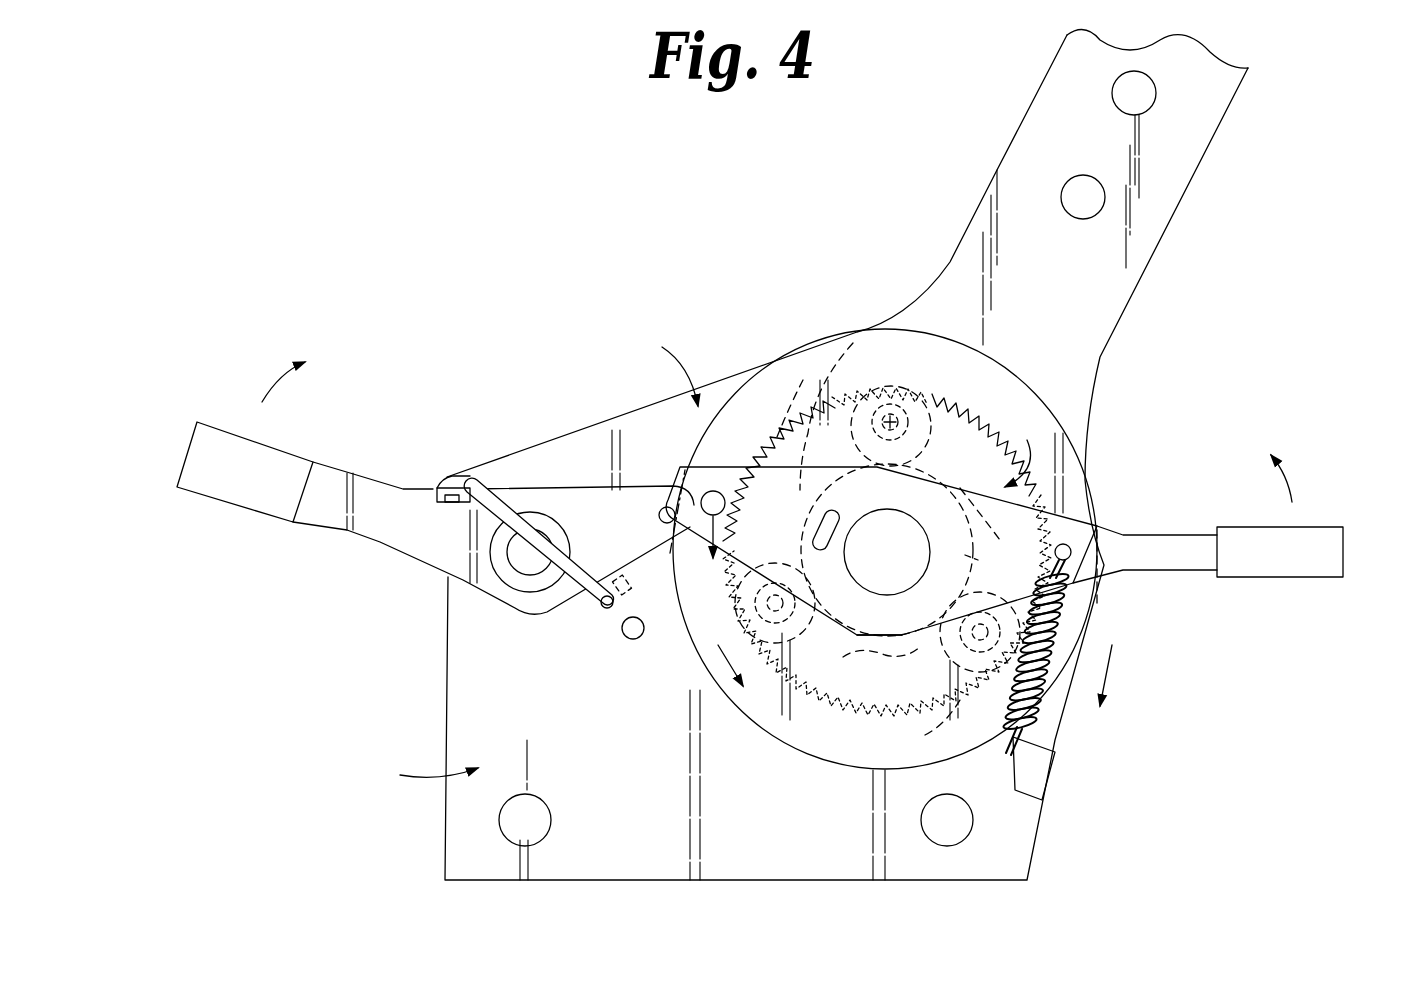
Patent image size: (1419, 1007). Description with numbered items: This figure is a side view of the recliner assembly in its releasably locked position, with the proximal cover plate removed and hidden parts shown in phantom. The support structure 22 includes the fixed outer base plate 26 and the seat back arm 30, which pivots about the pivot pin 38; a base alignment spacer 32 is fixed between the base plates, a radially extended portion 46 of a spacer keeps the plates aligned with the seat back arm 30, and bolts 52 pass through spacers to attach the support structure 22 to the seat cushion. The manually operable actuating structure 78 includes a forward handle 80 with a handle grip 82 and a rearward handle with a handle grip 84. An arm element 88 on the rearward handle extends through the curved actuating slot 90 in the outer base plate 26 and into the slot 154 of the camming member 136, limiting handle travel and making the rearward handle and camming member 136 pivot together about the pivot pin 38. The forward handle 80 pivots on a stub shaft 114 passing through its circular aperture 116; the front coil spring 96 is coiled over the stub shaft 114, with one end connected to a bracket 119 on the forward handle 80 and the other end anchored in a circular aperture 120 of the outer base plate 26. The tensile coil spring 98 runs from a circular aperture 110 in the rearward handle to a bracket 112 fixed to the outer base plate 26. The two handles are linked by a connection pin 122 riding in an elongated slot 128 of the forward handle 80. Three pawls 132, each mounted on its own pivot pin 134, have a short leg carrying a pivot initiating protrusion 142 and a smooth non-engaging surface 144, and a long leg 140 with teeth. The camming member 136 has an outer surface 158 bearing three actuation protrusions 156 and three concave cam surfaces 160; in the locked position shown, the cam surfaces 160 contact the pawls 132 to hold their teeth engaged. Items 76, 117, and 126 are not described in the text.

The support structure 22 is at (427, 778).
The fixed outer base plate 26 is at (447, 690).
The seat back arm 30 is at (1012, 122).
The base alignment spacer 32 is at (633, 642).
The pivot pin 38 is at (905, 530).
The radially extended portion 46 is at (1200, 572).
The bolt 52 is at (510, 826).
The brake drum 76 is at (674, 366).
The manually operable actuating structure 78 is at (881, 521).
The forward handle 80 is at (378, 530).
The handle grip 82 is at (200, 458).
The handle grip 84 is at (1332, 553).
The arm element 88 is at (820, 532).
The actuating slot 90 is at (850, 607).
The front coil spring 96 is at (582, 578).
The tensile coil spring 98 is at (1070, 622).
The circular aperture 110 is at (1072, 548).
The bracket 112 is at (1003, 750).
The stub shaft 114 is at (530, 530).
The circular aperture 116 is at (993, 554).
The clip 117 is at (440, 488).
The bracket 119 is at (452, 472).
The circular aperture 120 is at (607, 612).
The connection pin 122 is at (716, 491).
The pivot axis 126 is at (684, 468).
The elongated slot 128 is at (658, 514).
The pawl 132 is at (630, 604).
The pivot pin 134 is at (890, 388).
The camming member 136 is at (887, 530).
The long leg 140 is at (925, 740).
The pivot initiating protrusion 142 is at (932, 392).
The smooth non-engaging surface 144 is at (862, 328).
The slot 154 is at (847, 524).
The actuation protrusion 156 is at (850, 656).
The outer surface 158 is at (803, 414).
The concave cam surface 160 is at (995, 514).